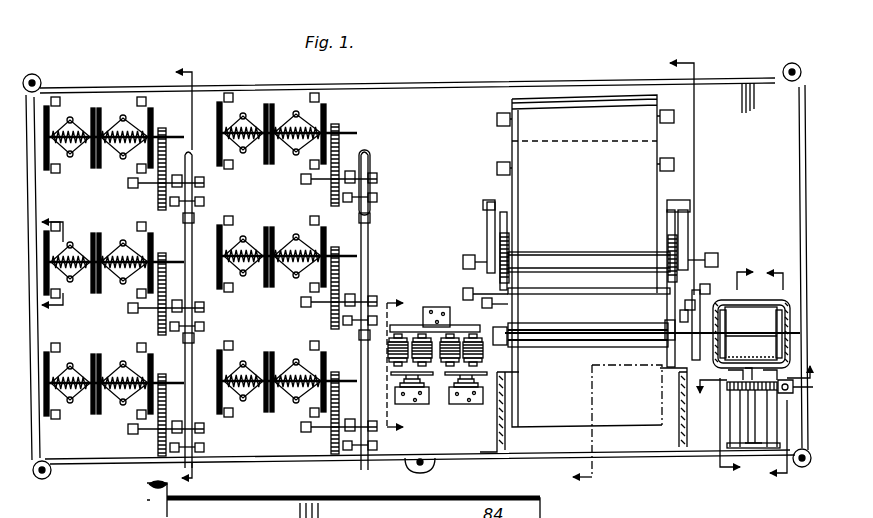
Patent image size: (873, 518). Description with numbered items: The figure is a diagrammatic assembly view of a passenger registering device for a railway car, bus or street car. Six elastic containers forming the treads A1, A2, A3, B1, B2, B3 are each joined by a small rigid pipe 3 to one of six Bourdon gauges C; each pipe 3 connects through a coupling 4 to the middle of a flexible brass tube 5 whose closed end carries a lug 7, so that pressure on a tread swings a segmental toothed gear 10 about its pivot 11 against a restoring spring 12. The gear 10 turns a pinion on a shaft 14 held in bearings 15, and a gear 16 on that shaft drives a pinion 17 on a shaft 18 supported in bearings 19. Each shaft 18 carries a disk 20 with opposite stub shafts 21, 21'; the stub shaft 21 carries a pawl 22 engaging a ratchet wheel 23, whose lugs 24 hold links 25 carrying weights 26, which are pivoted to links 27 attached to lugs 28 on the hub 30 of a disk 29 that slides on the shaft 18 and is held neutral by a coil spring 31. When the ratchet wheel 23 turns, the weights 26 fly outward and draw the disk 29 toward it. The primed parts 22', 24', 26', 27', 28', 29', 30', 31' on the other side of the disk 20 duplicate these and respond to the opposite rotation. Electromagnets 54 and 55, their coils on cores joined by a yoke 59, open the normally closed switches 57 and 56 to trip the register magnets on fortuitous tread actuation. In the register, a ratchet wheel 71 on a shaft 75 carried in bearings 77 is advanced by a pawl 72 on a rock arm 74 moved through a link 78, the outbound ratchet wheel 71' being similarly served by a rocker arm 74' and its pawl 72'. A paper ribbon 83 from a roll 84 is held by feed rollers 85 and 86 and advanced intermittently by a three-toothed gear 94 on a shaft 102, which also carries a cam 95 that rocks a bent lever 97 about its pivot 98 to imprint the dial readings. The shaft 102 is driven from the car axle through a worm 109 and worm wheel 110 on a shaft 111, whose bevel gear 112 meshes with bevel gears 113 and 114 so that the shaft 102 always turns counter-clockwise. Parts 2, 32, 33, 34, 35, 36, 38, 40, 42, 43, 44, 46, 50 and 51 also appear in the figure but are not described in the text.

The section line 2- 2 is at (631, 268).
The small rigid pipe 3 is at (172, 474).
The coupling 4 is at (368, 222).
The flexible brass tube 5 is at (58, 263).
The lug 7 is at (197, 269).
The segmental toothed gear 10 is at (786, 372).
The pivot 11 is at (377, 206).
The spring 12 is at (752, 402).
The shaft 14 is at (226, 328).
The bearings 15 is at (375, 171).
The gear 16 is at (148, 450).
The pinion 17 is at (163, 135).
The shaft 18 is at (345, 136).
The bearings 19 is at (216, 108).
The disk 20 is at (95, 112).
The stub shaft 21 is at (178, 250).
The stub shaft 21' is at (179, 144).
The pawl 22 is at (209, 300).
The pawl 22' is at (262, 82).
The ratchet wheel 23 is at (108, 125).
The lugs 24 is at (345, 267).
The lugs 24' is at (75, 103).
The links 25 is at (190, 360).
The weights 26 is at (226, 349).
The weights 26' is at (85, 343).
The links 27 is at (349, 106).
The links 27' is at (52, 335).
The lugs 28 is at (382, 149).
The lugs 28' is at (57, 442).
The disk 29 is at (363, 84).
The disk 29' is at (50, 79).
The hub portion 30 is at (393, 106).
The hub portion 30' is at (54, 185).
The coil spring 31 is at (297, 297).
The coil spring 31' is at (82, 221).
The bracket 32 is at (43, 98).
The bracket 33 is at (143, 104).
The link 34 is at (242, 113).
The bracket 35 is at (363, 133).
The link 36 is at (84, 301).
The hub 38 is at (184, 222).
The bracket 40 is at (57, 427).
The gear 42 is at (157, 437).
The gear 43 is at (180, 368).
The link 44 is at (255, 218).
The gear 46 is at (326, 248).
The gear 50 is at (322, 410).
The gear 51 is at (359, 363).
The electromagnet 54 is at (483, 362).
The electromagnet 55 is at (392, 328).
The switch 56 is at (437, 426).
The switch 57 is at (484, 428).
The yoke 59 is at (457, 325).
The ratchet wheel 71 is at (531, 243).
The ratchet wheel 71' is at (647, 240).
The pawl 72 is at (528, 223).
The rod 72' is at (708, 188).
The rock arm 74 is at (471, 235).
The rocker arm 74' is at (722, 222).
The shaft 75 is at (713, 255).
The bearings 77 is at (463, 260).
The link 78 is at (485, 205).
The ribbon of paper 83 is at (510, 150).
The roll 84 is at (587, 108).
The feed roller 85 is at (613, 326).
The feed roller 86 is at (513, 331).
The gear 94 is at (692, 356).
The cam 95 is at (660, 371).
The bent lever 97 is at (512, 285).
The pivot 98 is at (573, 292).
The shaft 102 is at (568, 344).
The worm 109 is at (777, 466).
The worm wheel 110 is at (700, 380).
The shaft 111 is at (750, 422).
The small bevel gear 112 is at (755, 345).
The bevel gear 113 is at (776, 322).
The bevel gear 114 is at (740, 307).
The tread A1 is at (91, 105).
The tread A2 is at (94, 204).
The tread A3 is at (92, 418).
The tread B1 is at (295, 108).
The tread B2 is at (381, 284).
The tread B3 is at (263, 435).
The Bourdon gauge C is at (371, 190).